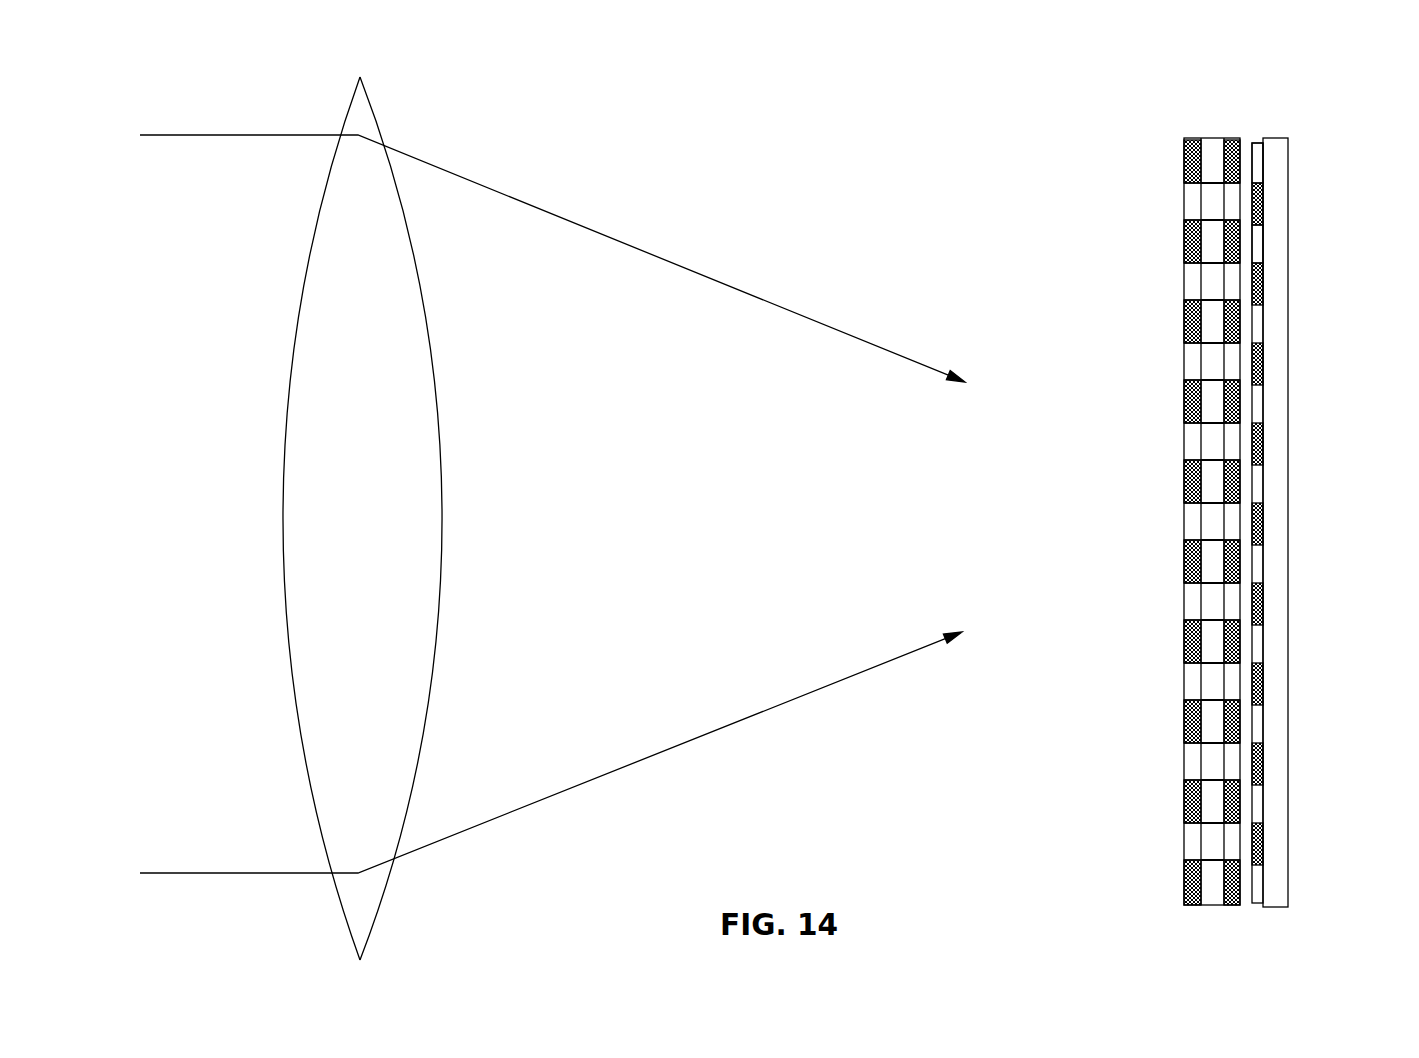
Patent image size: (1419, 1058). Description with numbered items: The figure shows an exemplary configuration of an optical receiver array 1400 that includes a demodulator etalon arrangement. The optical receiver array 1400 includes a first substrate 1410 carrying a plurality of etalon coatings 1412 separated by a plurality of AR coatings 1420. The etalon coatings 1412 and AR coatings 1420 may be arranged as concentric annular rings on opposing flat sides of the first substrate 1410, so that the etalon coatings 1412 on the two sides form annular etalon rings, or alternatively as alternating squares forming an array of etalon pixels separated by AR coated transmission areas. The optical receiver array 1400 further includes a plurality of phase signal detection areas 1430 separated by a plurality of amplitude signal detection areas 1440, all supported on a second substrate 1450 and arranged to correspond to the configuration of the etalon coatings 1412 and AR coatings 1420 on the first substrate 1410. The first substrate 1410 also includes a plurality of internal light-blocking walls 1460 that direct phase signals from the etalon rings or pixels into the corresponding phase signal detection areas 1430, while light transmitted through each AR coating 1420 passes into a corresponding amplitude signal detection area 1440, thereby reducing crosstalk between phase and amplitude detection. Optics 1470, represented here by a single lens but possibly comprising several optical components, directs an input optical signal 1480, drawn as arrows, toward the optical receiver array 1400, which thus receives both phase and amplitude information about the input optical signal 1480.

The optical receiver array 1400 is at (876, 121).
The first substrate 1410 is at (1151, 516).
The etalon coatings 1412 is at (1183, 150).
The AR coatings 1420 is at (1183, 202).
The phase signal detection areas 1430 is at (1265, 163).
The amplitude signal detection areas 1440 is at (1265, 196).
The second substrate 1450 is at (1307, 487).
The internal light-blocking walls 1460 is at (1213, 263).
The optics 1470 is at (378, 123).
The input optical signal 1480 is at (257, 135).